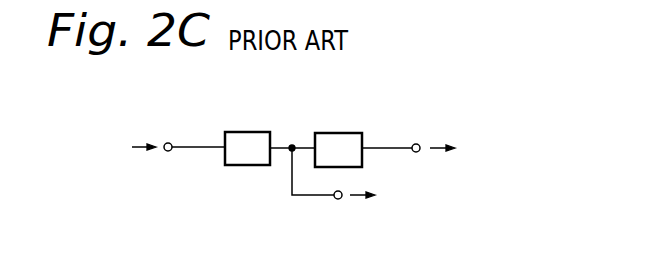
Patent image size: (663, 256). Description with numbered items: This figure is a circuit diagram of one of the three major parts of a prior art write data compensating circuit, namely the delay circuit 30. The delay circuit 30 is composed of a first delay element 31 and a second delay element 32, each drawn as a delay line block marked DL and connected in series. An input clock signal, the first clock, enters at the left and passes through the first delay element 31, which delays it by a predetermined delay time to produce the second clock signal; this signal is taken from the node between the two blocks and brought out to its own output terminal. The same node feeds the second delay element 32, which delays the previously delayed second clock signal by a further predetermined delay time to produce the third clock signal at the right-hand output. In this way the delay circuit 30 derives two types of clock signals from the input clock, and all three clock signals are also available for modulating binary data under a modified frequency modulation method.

The delay circuit 30 is at (304, 116).
The first delay element 31 is at (247, 132).
The second delay element 32 is at (349, 133).